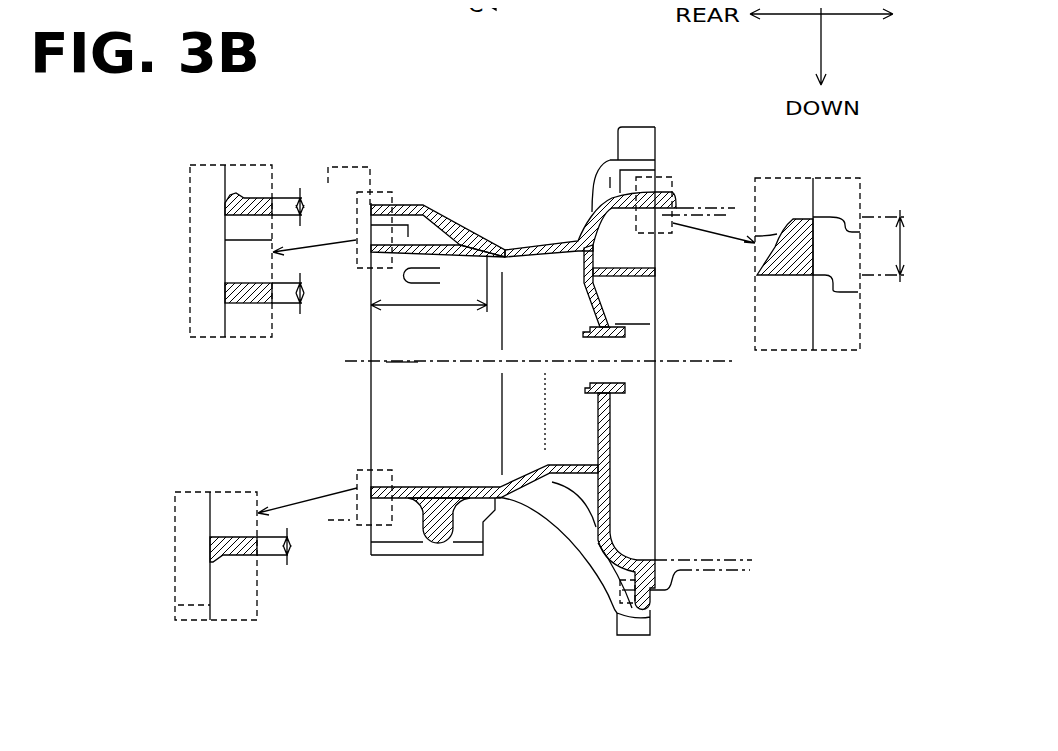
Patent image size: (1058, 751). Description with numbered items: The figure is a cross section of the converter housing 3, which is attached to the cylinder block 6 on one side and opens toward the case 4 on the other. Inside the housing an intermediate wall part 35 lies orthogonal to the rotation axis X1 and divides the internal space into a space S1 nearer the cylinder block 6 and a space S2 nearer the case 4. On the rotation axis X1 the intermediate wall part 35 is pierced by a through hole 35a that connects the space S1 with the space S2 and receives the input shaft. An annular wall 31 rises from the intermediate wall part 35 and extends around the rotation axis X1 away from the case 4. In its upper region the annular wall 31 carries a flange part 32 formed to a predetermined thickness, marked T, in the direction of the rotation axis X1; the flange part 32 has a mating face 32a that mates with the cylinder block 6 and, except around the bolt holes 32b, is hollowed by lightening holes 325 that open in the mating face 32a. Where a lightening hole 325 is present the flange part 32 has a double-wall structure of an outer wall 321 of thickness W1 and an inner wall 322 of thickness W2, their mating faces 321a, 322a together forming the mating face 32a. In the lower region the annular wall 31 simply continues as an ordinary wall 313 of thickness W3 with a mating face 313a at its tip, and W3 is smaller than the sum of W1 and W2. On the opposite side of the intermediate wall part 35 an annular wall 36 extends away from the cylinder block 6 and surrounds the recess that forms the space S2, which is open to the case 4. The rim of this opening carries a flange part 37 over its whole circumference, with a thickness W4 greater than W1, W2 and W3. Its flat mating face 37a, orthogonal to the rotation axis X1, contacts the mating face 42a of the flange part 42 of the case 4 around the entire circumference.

The converter housing 3 is at (481, 220).
The case 4 is at (722, 206).
The cylinder block 6 is at (338, 160).
The annular wall 31 is at (508, 243).
The flange part 32 is at (473, 133).
The mating face 32a is at (113, 175).
The bolt holes 32b is at (412, 16).
The intermediate wall part 35 is at (584, 272).
The through hole 35a is at (604, 383).
The annular wall 36 is at (650, 228).
The flange part 37 is at (652, 165).
The mating face 37a is at (813, 237).
The flange part 42 is at (660, 190).
The mating face 42a is at (793, 278).
The ordinary wall 313 is at (400, 486).
The mating face 313a is at (210, 548).
The outer wall 321 is at (402, 203).
The mating face 321a is at (225, 203).
The inner wall 322 is at (441, 226).
The mating face 322a is at (225, 293).
The lightening holes 325 is at (446, 238).
The thickness of outer wall W1 is at (302, 207).
The thickness of inner wall W2 is at (302, 293).
The thickness of ordinary wall W3 is at (291, 546).
The thickness of flange part W4 is at (900, 246).
The space S1 is at (402, 347).
The space S2 is at (632, 309).
The thickness T is at (429, 301).
The rotation axis X1 is at (520, 361).